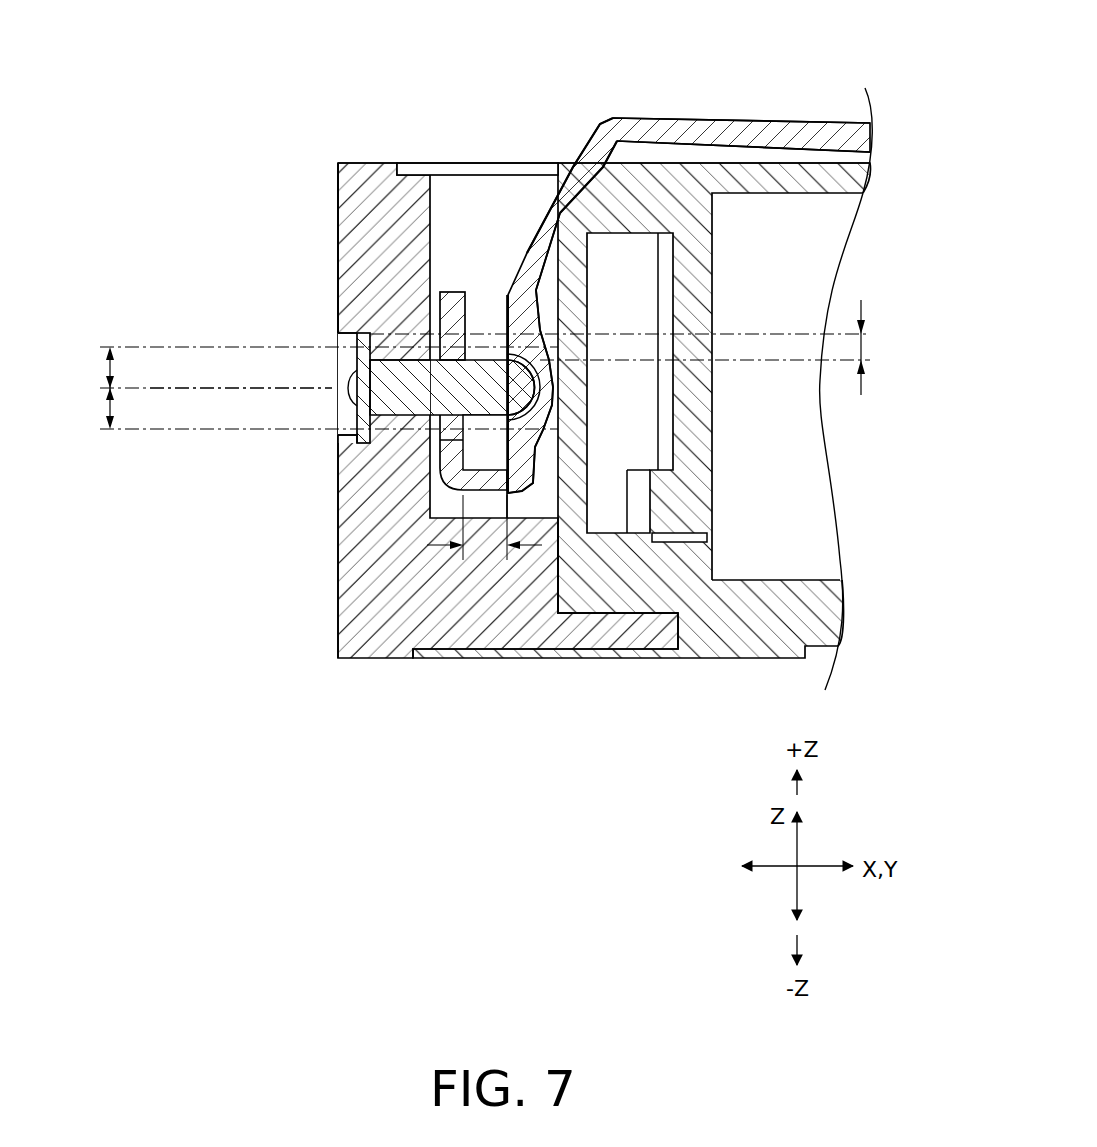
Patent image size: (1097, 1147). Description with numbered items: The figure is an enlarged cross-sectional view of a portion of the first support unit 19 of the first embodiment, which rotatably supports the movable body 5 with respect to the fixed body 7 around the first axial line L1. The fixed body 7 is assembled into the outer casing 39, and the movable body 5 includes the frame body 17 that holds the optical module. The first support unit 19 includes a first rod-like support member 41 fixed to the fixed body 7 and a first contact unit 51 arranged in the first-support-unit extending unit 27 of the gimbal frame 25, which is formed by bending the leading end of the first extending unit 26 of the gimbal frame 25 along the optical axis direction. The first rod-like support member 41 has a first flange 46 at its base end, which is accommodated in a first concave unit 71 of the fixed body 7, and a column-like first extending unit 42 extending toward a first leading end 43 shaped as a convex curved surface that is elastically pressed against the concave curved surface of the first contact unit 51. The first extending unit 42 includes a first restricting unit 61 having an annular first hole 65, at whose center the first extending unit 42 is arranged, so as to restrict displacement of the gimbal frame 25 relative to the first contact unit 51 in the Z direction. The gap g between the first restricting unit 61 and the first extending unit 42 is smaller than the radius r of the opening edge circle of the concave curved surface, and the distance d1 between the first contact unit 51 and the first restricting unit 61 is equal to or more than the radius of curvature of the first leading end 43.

The fixed body 7 is at (360, 163).
The outer casing 39 is at (604, 410).
The first support unit 19 is at (312, 262).
The first contact unit 51 is at (517, 353).
The first flange 46 is at (355, 335).
The first hole 65 is at (433, 360).
The first concave unit 71 is at (350, 433).
The first extending unit 42 is at (370, 443).
The first rod-like support member 41 is at (420, 410).
The frame body 17 is at (557, 493).
The first restricting unit 61 is at (457, 296).
The first-support-unit extending unit 27 is at (503, 298).
The first leading end 43 is at (527, 387).
The first extending unit 26 is at (637, 117).
The gimbal frame 25 is at (694, 110).
The movable body 5 is at (707, 147).
The gap g is at (861, 345).
The radius r is at (108, 403).
The first axial line L1 is at (194, 390).
The distance d1 is at (487, 547).